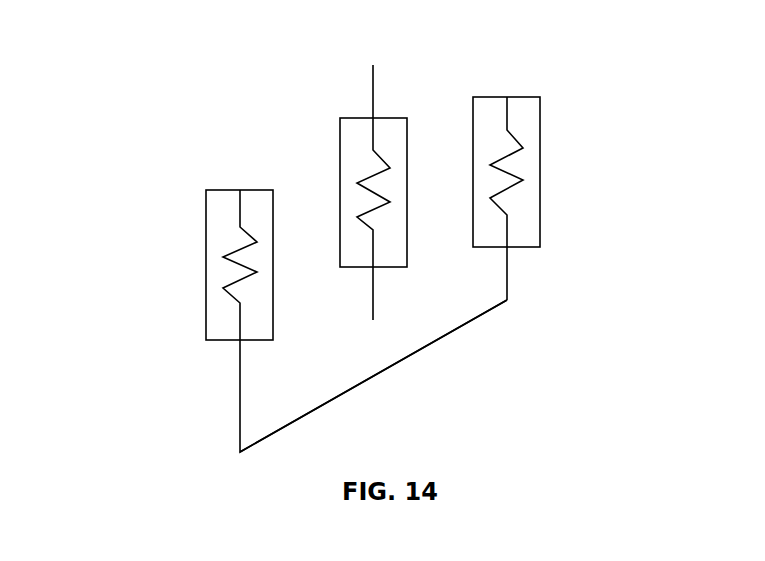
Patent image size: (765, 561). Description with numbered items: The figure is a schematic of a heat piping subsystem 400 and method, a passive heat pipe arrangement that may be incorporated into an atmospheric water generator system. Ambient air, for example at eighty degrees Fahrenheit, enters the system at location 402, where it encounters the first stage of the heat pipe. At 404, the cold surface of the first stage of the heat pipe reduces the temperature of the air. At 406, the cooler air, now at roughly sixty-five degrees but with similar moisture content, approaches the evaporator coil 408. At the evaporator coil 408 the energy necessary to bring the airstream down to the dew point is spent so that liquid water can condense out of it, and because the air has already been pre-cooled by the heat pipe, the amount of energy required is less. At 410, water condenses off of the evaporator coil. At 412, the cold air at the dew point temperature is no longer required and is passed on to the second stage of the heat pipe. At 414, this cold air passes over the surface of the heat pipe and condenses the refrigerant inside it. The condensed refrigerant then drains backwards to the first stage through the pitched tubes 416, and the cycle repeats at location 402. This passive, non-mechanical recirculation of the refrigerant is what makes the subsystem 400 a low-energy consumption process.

The heat piping subsystem 400 is at (148, 125).
The ambient air entry location 402 is at (190, 282).
The cold surface of the first stage of the heat pipe 404 is at (223, 200).
The cooler air 406 is at (332, 211).
The evaporator coil 408 is at (352, 125).
The water condensation 410 is at (360, 322).
The cold air at dew point 412 is at (462, 246).
The second stage of the heat pipe 414 is at (527, 240).
The pitched tubes 416 is at (373, 377).